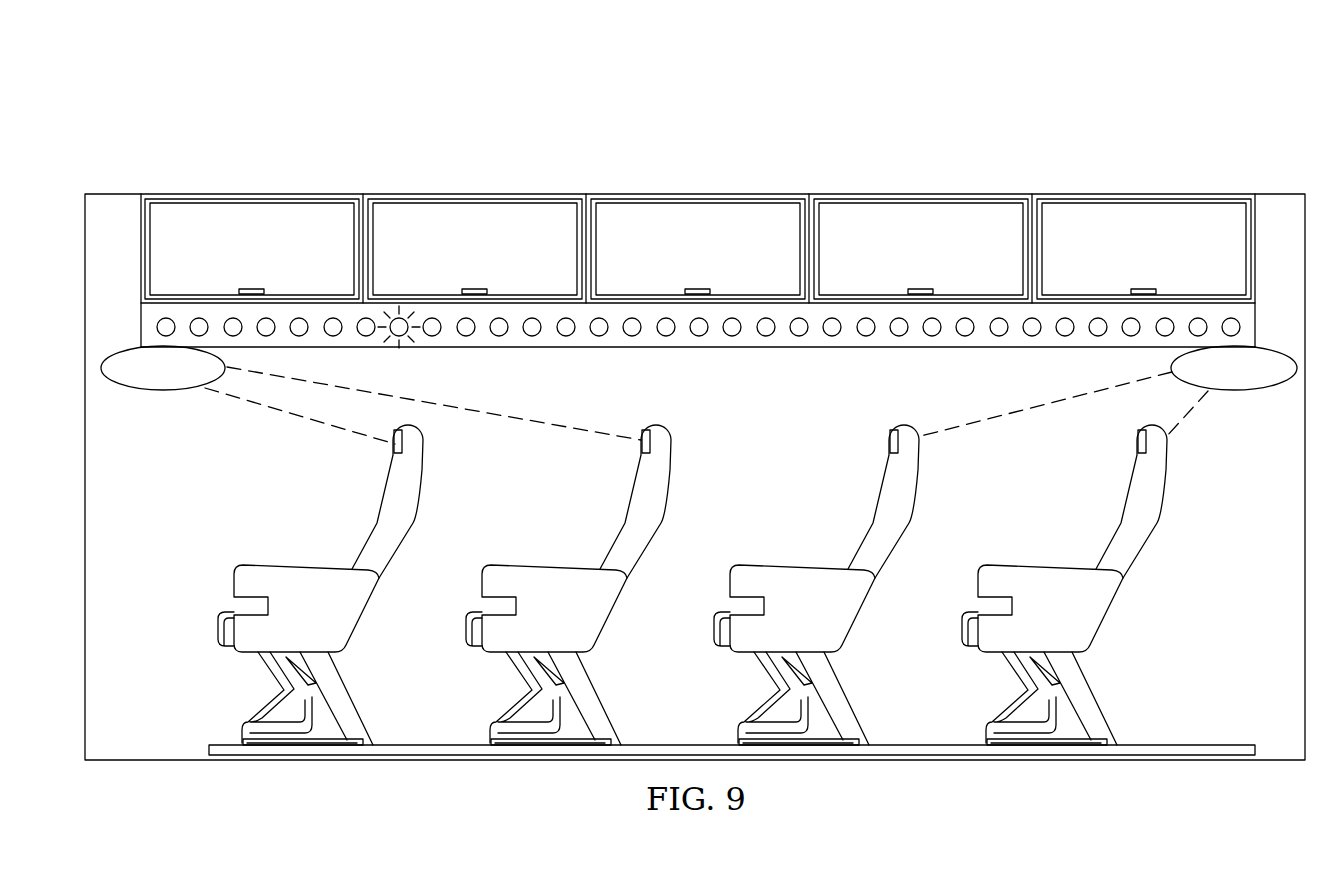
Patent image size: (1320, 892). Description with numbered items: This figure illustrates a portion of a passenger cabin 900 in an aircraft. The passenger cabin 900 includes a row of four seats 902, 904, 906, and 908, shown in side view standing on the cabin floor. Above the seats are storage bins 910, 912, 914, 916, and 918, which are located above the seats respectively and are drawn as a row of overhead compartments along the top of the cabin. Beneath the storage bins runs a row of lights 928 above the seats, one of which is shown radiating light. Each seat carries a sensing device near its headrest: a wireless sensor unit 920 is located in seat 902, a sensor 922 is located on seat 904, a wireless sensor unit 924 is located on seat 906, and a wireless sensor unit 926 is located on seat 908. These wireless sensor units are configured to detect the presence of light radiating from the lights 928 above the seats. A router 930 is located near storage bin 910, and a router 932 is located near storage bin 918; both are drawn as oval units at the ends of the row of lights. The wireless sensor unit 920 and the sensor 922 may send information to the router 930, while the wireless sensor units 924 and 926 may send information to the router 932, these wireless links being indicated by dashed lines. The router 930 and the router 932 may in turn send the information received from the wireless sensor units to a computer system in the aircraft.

The passenger cabin 900 is at (406, 115).
The seat 902 is at (335, 620).
The seat 904 is at (568, 585).
The seat 906 is at (816, 585).
The seat 908 is at (1064, 585).
The storage bin 910 is at (252, 208).
The storage bin 912 is at (475, 208).
The storage bin 914 is at (698, 208).
The storage bin 916 is at (921, 208).
The storage bin 918 is at (1144, 208).
The wireless sensor unit 920 is at (424, 443).
The sensor 922 is at (672, 443).
The wireless sensor unit 924 is at (889, 443).
The wireless sensor unit 926 is at (1137, 443).
The lights 928 is at (409, 343).
The router 930 is at (150, 390).
The router 932 is at (1236, 390).